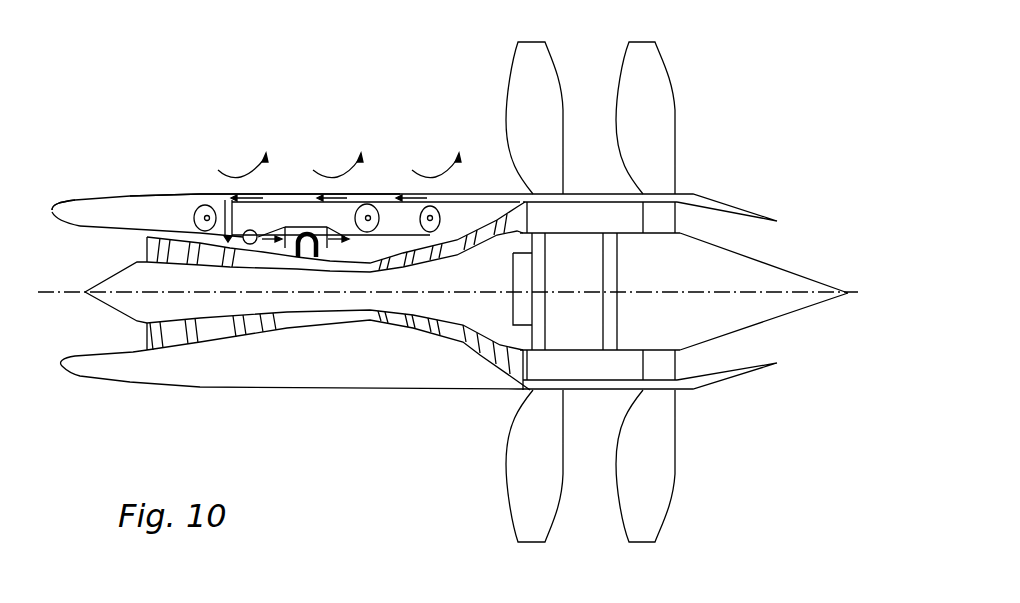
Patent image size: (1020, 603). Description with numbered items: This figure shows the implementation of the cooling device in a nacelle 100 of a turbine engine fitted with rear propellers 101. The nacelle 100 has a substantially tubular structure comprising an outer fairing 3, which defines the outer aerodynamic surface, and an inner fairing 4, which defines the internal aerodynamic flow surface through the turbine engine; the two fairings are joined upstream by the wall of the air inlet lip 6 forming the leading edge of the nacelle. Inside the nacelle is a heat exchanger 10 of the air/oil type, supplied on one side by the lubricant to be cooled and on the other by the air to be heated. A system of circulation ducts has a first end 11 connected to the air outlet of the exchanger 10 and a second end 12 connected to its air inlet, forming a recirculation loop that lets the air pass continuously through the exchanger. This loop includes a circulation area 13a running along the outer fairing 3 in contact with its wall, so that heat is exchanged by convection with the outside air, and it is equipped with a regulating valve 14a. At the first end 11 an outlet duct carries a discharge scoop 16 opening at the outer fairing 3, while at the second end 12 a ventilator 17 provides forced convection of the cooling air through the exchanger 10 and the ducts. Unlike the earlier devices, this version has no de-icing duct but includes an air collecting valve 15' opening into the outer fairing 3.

The outer fairing 3 is at (106, 196).
The inner fairing 4 is at (97, 228).
The air inlet lip 6 is at (53, 208).
The heat exchanger 10 is at (290, 245).
The first end 11 is at (337, 245).
The second end 12 is at (277, 245).
The circulation area 13a is at (305, 196).
The regulating valve 14a is at (437, 217).
The air collecting valve 15' is at (178, 197).
The discharge scoop 16 is at (371, 200).
The ventilator 17 is at (246, 234).
The nacelle 100 is at (328, 104).
The rear propellers 101 is at (541, 61).